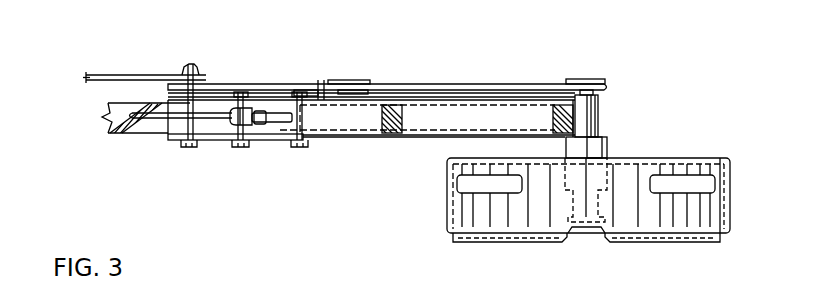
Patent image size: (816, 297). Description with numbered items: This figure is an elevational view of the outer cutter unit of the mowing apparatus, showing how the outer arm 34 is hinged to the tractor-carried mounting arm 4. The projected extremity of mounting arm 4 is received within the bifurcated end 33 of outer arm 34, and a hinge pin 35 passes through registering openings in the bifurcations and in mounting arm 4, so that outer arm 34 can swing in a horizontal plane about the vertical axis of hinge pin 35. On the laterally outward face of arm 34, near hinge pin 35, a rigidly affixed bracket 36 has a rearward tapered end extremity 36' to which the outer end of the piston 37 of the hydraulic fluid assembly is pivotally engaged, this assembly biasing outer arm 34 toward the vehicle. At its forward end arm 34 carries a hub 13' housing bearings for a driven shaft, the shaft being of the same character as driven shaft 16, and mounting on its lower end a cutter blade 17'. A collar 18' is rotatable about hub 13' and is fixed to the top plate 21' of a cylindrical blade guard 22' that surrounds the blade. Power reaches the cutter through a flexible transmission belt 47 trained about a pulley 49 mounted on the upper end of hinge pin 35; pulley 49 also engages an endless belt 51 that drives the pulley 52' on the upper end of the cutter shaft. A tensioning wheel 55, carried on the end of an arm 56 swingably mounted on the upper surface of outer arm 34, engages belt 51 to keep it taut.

The mounting arm 4 is at (105, 112).
The hub 13' is at (634, 110).
The driven shaft 16 is at (608, 98).
The cutter blade 17' is at (586, 256).
The collar 18' is at (623, 133).
The top plate 21' is at (611, 176).
The cylindrical blade guard 22' is at (758, 195).
The bifurcated end 33 is at (213, 143).
The outer arm 34 is at (373, 138).
The hinge pin 35 is at (178, 119).
The bracket 36 is at (274, 154).
The tapered end extremity 36' is at (280, 167).
The piston 37 is at (150, 121).
The flexible transmission belt 47 is at (124, 75).
The pulley 49 is at (175, 73).
The endless belt 51 is at (430, 85).
The pulley 52' is at (621, 54).
The tensioning wheel 55 is at (372, 83).
The arm 56 is at (321, 82).